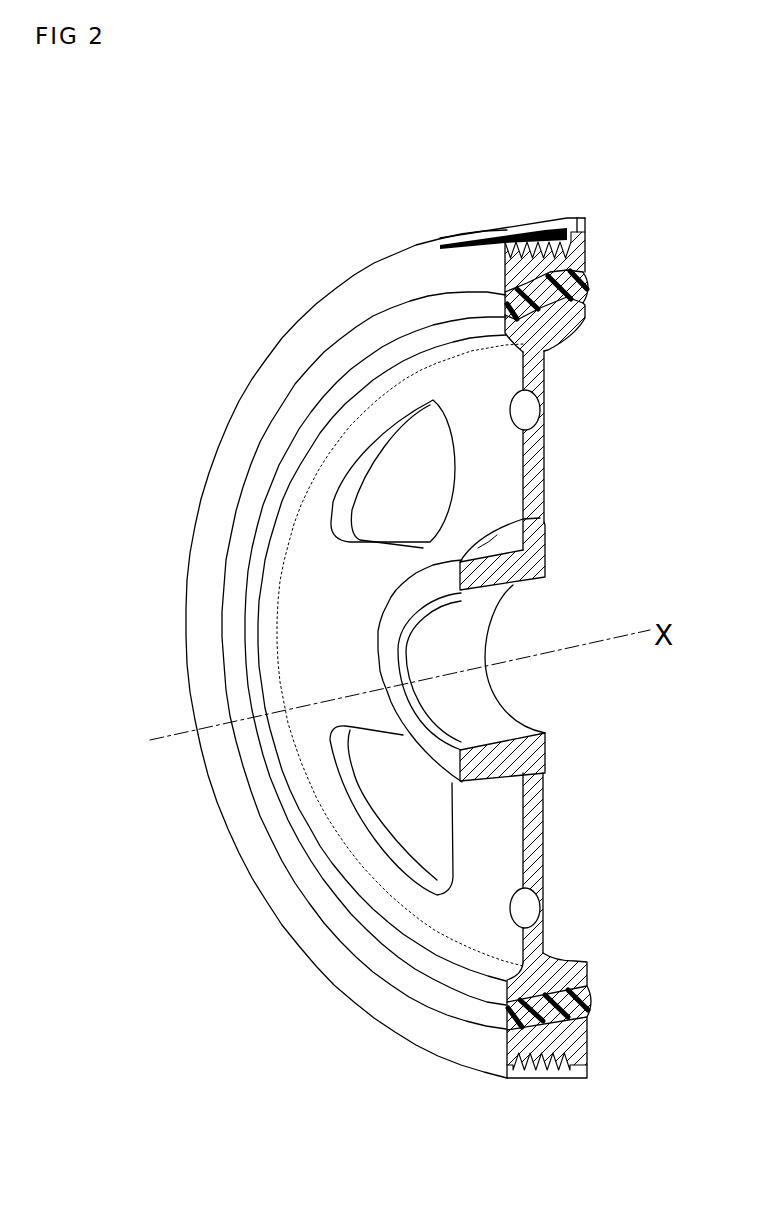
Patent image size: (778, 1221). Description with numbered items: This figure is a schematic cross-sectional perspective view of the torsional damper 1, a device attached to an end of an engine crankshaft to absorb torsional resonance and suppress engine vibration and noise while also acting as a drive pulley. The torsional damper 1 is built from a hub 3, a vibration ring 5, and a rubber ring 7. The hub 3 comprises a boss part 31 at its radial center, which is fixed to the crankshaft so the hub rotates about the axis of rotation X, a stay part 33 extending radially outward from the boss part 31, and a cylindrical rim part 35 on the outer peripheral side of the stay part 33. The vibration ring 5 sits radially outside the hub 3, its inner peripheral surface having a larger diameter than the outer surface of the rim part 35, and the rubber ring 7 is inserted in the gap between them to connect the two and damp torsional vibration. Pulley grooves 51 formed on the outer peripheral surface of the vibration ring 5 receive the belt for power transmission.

The torsional damper 1 is at (244, 256).
The hub 3 is at (654, 312).
The vibration ring 5 is at (588, 263).
The rubber ring 7 is at (593, 287).
The boss part 31 is at (547, 525).
The stay part 33 is at (547, 452).
The rim part 35 is at (591, 318).
The pulley grooves 51 is at (548, 243).